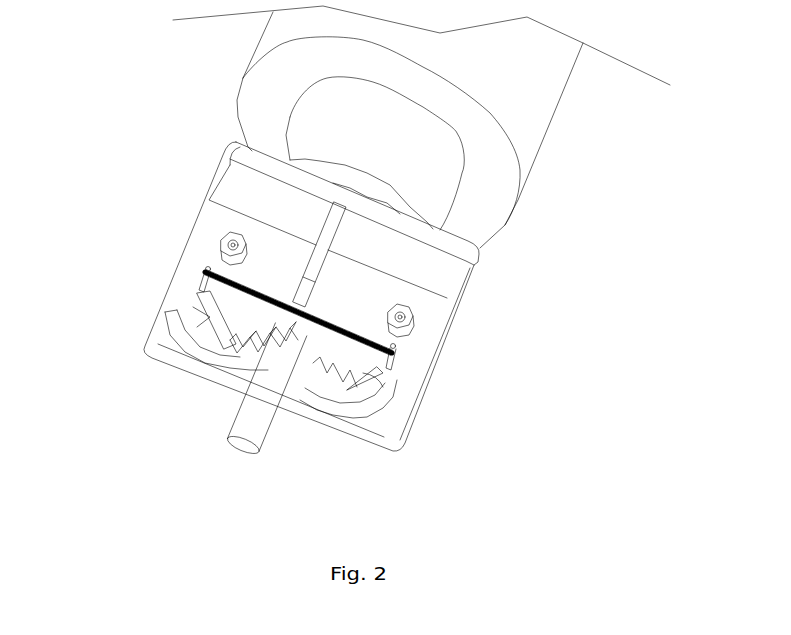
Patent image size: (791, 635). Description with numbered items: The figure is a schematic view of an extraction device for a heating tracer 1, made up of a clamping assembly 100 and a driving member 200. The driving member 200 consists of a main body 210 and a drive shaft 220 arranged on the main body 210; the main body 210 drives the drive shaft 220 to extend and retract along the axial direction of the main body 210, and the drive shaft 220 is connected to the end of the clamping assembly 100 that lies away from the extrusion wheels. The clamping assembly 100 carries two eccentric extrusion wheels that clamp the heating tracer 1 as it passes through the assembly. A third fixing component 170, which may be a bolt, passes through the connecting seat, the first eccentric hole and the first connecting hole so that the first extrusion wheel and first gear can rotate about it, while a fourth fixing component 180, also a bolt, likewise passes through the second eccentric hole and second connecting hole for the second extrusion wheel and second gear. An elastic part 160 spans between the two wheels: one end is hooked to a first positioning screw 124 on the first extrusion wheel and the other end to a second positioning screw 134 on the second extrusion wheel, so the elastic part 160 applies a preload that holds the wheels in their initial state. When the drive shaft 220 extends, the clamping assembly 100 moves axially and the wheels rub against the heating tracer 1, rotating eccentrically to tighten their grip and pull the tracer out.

The heating tracer 1 is at (247, 417).
The clamping assembly 100 is at (287, 328).
The first positioning screw 124 is at (200, 280).
The second positioning screw 134 is at (395, 355).
The elastic part 160 is at (357, 330).
The third fixing component 170 is at (233, 245).
The fourth fixing component 180 is at (400, 317).
The driving member 200 is at (434, 127).
The main body 210 is at (513, 92).
The drive shaft 220 is at (433, 163).